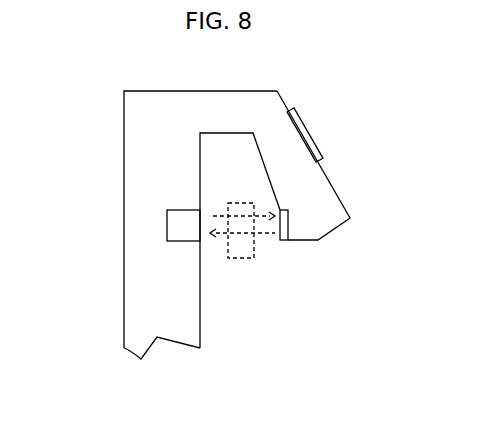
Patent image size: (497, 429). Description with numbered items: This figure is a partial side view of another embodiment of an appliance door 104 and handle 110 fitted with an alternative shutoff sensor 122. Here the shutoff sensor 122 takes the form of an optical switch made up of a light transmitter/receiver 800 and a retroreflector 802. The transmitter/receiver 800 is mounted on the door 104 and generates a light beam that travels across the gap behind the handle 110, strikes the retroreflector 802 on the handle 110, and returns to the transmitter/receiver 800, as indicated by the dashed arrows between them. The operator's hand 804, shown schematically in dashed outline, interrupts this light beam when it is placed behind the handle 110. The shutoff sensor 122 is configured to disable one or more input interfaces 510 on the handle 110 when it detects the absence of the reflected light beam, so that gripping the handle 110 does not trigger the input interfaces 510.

The door 104 is at (134, 163).
The handle 110 is at (322, 207).
The input interface 510 is at (312, 132).
The shutoff sensor 122 is at (177, 233).
The light transmitter/receiver 800 is at (167, 238).
The retroreflector 802 is at (288, 222).
The operator's hand 804 is at (244, 258).